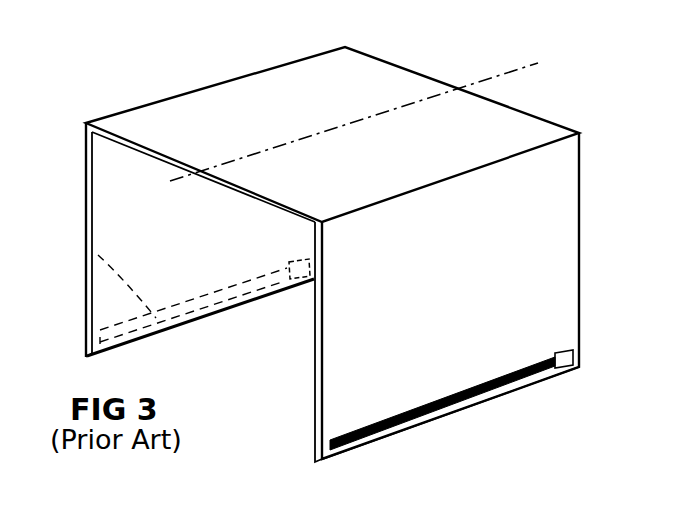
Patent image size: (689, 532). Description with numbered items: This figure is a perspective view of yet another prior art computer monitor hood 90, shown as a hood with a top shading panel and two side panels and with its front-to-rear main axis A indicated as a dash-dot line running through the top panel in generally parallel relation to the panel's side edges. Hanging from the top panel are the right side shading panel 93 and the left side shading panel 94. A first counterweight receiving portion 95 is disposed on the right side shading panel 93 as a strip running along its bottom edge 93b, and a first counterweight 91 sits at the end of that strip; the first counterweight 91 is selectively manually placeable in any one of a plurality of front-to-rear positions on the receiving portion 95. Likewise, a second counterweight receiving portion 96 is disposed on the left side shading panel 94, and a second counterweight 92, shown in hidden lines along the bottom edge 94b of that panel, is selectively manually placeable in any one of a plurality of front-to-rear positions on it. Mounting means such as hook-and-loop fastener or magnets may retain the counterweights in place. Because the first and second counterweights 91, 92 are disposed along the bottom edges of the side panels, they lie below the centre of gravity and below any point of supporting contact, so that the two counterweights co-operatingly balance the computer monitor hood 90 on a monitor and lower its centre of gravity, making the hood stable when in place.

The computer monitor hood 90 is at (116, 66).
The front-to-rear main axis A is at (538, 63).
The first counterweight 91 is at (563, 362).
The second counterweight 92 is at (300, 281).
The right side shading panel 93 is at (570, 238).
The bottom edge of right side shading panel 93b is at (430, 425).
The left side shading panel 94 is at (100, 285).
The bottom edge of left side shading panel 94b is at (210, 318).
The first counterweight receiving portion 95 is at (496, 392).
The second counterweight receiving portion 96 is at (96, 253).